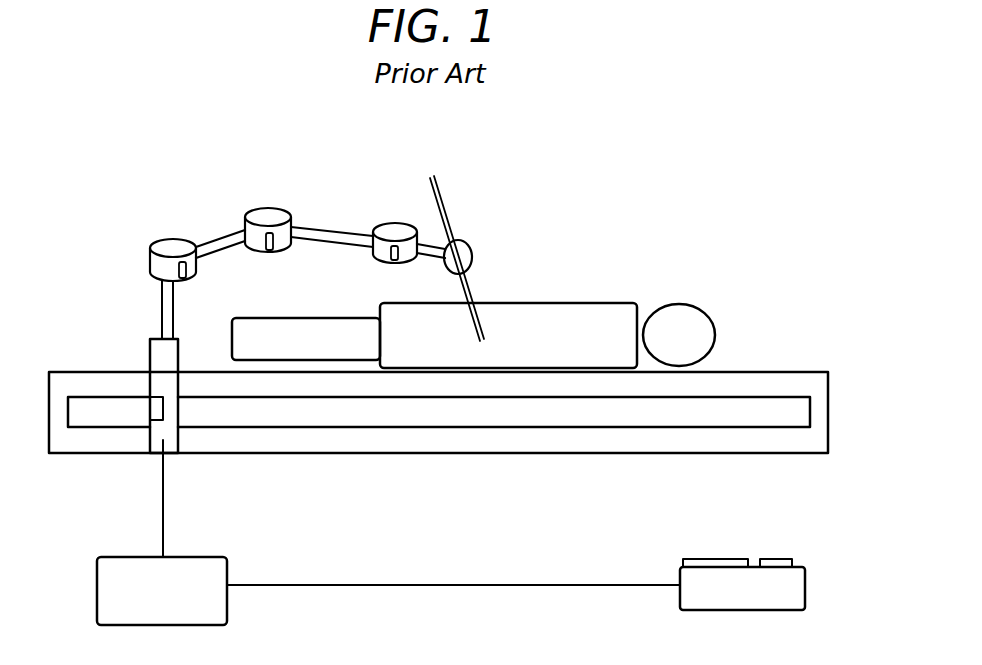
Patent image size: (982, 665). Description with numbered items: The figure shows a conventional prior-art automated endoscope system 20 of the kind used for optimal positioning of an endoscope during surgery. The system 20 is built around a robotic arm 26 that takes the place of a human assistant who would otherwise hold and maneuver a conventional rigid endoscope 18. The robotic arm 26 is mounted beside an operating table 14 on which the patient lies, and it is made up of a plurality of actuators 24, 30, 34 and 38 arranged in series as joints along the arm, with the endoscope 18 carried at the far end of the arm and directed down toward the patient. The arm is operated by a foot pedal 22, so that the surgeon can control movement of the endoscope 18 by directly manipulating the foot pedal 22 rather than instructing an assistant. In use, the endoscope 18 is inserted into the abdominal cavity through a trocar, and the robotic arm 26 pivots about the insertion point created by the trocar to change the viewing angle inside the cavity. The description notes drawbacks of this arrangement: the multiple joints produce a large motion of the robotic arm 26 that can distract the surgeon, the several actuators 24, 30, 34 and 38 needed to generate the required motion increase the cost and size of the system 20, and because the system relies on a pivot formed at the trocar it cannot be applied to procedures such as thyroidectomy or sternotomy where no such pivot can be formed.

The automated endoscope system 20 is at (668, 163).
The operating table 14 is at (520, 442).
The actuator 24 is at (155, 355).
The robotic arm 26 is at (140, 265).
The actuator 38 is at (160, 238).
The actuator 34 is at (263, 208).
The actuator 30 is at (382, 228).
The rigid endoscope 18 is at (438, 185).
The foot pedal 22 is at (796, 586).